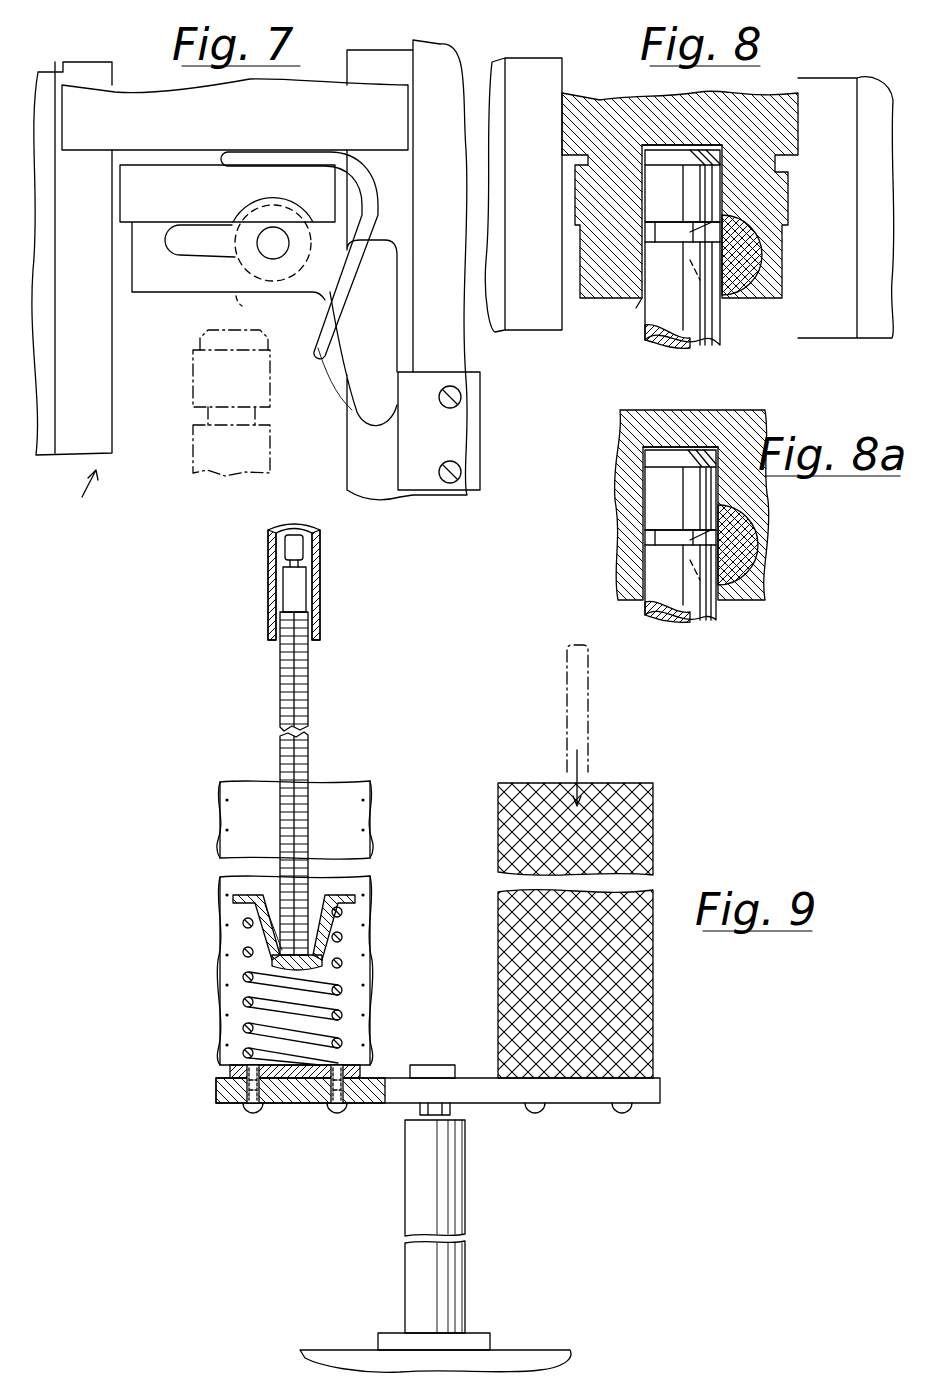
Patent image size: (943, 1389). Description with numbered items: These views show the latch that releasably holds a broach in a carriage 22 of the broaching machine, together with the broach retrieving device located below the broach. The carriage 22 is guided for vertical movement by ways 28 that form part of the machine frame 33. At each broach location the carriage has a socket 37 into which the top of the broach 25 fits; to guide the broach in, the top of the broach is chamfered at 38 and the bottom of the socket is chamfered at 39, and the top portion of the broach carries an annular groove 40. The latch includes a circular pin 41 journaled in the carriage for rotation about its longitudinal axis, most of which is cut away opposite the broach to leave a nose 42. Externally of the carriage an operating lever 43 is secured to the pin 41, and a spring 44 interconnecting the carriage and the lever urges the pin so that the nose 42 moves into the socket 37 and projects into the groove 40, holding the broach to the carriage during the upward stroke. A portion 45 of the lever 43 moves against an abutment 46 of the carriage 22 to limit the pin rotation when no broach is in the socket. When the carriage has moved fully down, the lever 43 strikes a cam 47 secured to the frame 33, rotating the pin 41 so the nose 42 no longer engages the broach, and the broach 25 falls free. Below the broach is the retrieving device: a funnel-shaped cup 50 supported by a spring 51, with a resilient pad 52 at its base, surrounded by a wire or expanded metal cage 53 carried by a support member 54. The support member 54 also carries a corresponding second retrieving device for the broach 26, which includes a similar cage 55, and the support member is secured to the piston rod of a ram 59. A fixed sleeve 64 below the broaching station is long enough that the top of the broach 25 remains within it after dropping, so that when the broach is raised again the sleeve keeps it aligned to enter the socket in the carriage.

In FIG. 7, the carriage 22 is at (258, 131).
In FIG. 8, the carriage 22 is at (777, 95).
In FIG. 8A, the carriage 22 is at (620, 497).
In FIG. 7, the broach 25 is at (200, 460).
In FIG. 8, the broach 25 is at (708, 325).
In FIG. 8A, the broach 25 is at (718, 625).
In FIG. 9, the broach 25 is at (284, 742).
In FIG. 9, the broach 26 is at (567, 725).
In FIG. 7, the ways 28 is at (112, 378).
In FIG. 7, the machine frame 33 is at (74, 504).
In FIG. 8, the socket 37 is at (720, 145).
In FIG. 8A, the socket 37 is at (692, 447).
In FIG. 7, the chamfer 38 is at (198, 340).
In FIG. 8, the chamfer 38 is at (650, 150).
In FIG. 8A, the chamfer 38 is at (643, 458).
In FIG. 9, the chamfer 38 is at (306, 535).
In FIG. 8, the chamfer 39 is at (640, 300).
In FIG. 7, the annular groove 40 is at (203, 412).
In FIG. 8, the annular groove 40 is at (648, 232).
In FIG. 8A, the annular groove 40 is at (648, 535).
In FIG. 9, the annular groove 40 is at (287, 572).
In FIG. 7, the circular pin 41 is at (256, 309).
In FIG. 8, the circular pin 41 is at (735, 218).
In FIG. 8A, the circular pin 41 is at (725, 527).
In FIG. 8, the nose 42 is at (690, 228).
In FIG. 8A, the nose 42 is at (740, 548).
In FIG. 7, the operating lever 43 is at (355, 395).
In FIG. 7, the spring 44 is at (373, 208).
In FIG. 7, the portion of lever 45 is at (352, 232).
In FIG. 7, the abutment 46 is at (330, 238).
In FIG. 7, the cam 47 is at (410, 437).
In FIG. 9, the funnel-shaped cup 50 is at (328, 927).
In FIG. 9, the spring 51 is at (343, 1017).
In FIG. 9, the resilient pad 52 is at (275, 962).
In FIG. 9, the cage 53 is at (220, 880).
In FIG. 9, the support member 54 is at (375, 1103).
In FIG. 9, the cage 55 is at (498, 876).
In FIG. 9, the ram 59 is at (410, 1258).
In FIG. 9, the sleeve 64 is at (320, 632).